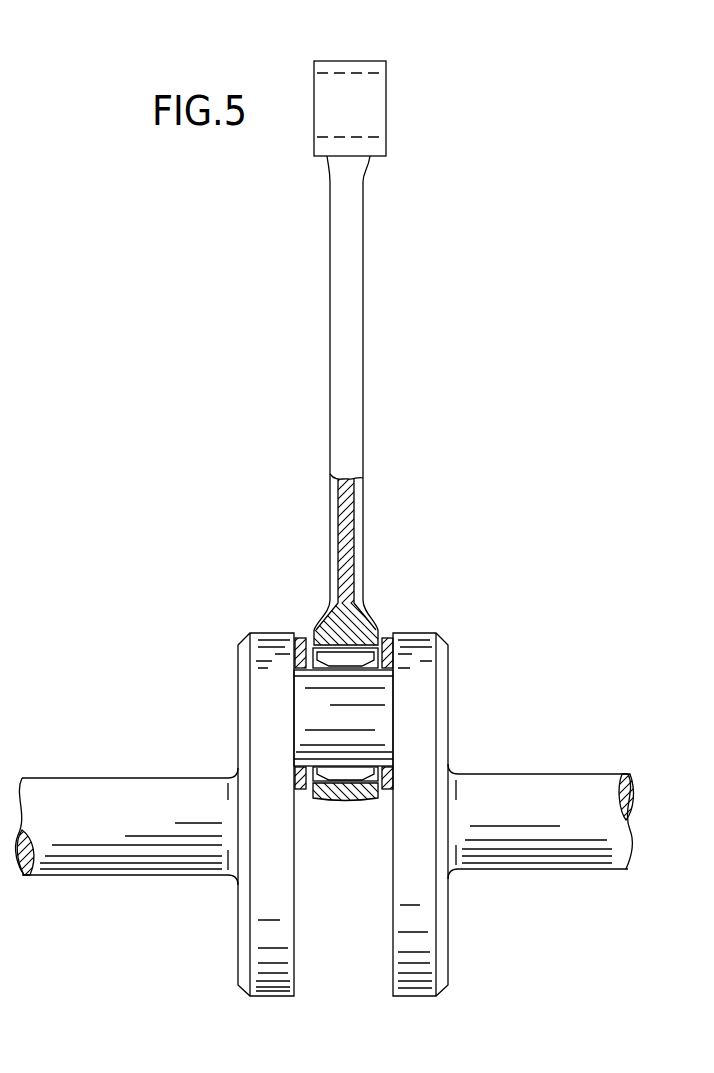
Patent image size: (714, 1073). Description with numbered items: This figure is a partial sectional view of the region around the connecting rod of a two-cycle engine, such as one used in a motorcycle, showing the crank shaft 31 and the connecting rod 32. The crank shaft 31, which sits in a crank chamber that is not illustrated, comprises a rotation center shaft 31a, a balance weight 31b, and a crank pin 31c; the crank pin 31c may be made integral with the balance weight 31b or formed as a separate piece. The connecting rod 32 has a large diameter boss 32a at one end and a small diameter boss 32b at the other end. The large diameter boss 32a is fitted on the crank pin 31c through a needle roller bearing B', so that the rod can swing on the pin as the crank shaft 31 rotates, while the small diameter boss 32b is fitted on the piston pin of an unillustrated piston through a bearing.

The crank shaft 31 is at (325, 811).
The rotation center shaft 31a is at (102, 792).
The balance weight 31b is at (258, 948).
The crank pin 31c is at (304, 692).
The connecting rod 32 is at (348, 347).
The large diameter boss 32a is at (326, 636).
The small diameter boss 32b is at (372, 66).
The needle roller bearing B' is at (383, 604).